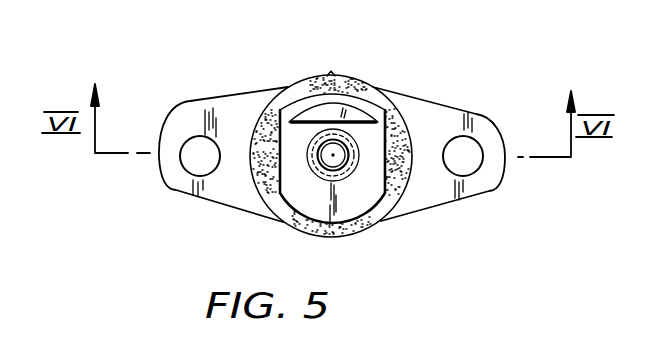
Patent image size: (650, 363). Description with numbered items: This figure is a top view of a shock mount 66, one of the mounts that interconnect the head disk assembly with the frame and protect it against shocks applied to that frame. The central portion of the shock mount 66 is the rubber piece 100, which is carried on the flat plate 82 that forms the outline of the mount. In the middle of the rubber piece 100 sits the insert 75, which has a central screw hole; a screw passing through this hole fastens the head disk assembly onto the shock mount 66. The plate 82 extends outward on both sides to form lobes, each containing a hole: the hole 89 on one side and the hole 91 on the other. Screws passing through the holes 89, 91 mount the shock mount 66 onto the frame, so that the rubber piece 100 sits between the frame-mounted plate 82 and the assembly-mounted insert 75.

The shock mount 66 is at (348, 126).
The insert 75 is at (290, 146).
The plate 82 is at (433, 119).
The hole 89 is at (222, 157).
The hole 91 is at (468, 162).
The rubber piece 100 is at (393, 97).